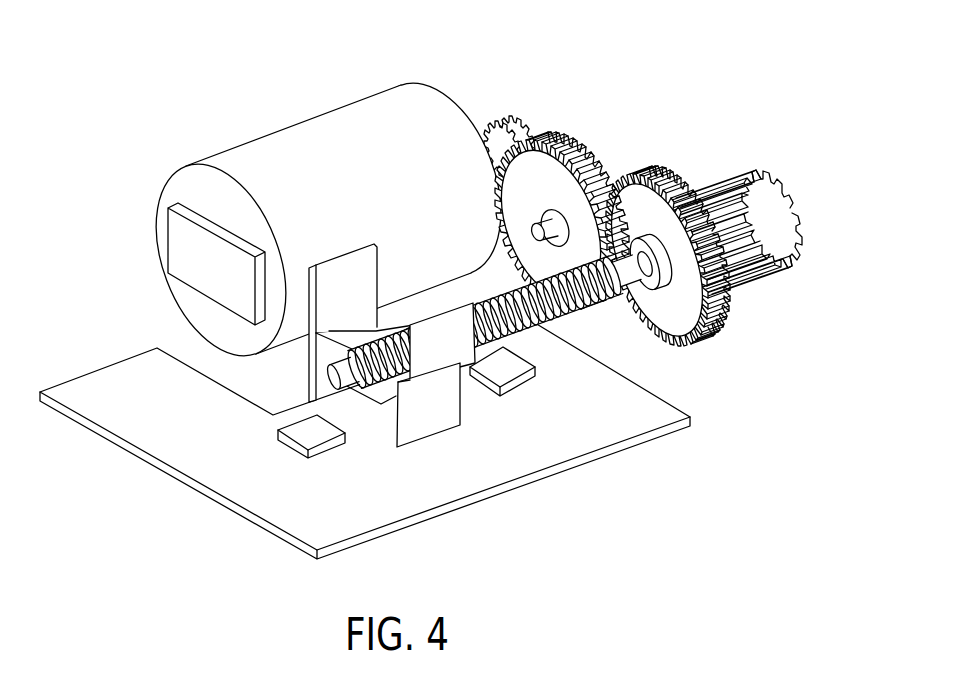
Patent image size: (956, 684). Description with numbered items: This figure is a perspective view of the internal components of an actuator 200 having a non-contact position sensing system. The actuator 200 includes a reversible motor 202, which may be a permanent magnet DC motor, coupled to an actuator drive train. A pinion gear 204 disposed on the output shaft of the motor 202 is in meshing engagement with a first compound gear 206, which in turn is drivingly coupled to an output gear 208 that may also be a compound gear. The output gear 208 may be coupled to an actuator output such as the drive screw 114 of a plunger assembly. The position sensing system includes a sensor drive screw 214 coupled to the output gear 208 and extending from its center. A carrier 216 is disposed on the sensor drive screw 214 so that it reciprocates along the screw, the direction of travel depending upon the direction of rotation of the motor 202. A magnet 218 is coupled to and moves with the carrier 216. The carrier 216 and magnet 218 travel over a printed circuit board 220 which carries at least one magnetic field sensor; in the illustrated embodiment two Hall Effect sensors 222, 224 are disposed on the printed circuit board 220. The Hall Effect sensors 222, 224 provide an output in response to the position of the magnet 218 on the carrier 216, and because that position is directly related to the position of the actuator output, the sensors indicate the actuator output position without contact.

The actuator 200 is at (199, 100).
The reversible motor 202 is at (308, 121).
The pinion gear 204 is at (488, 137).
The first compound gear 206 is at (573, 138).
The output gear 208 is at (686, 175).
The drive screw 114 is at (693, 190).
The sensor drive screw 214 is at (578, 290).
The carrier 216 is at (441, 420).
The magnet 218 is at (364, 400).
The printed circuit board 220 is at (155, 458).
The Hall Effect sensor 222 is at (518, 374).
The Hall Effect sensor 224 is at (327, 446).